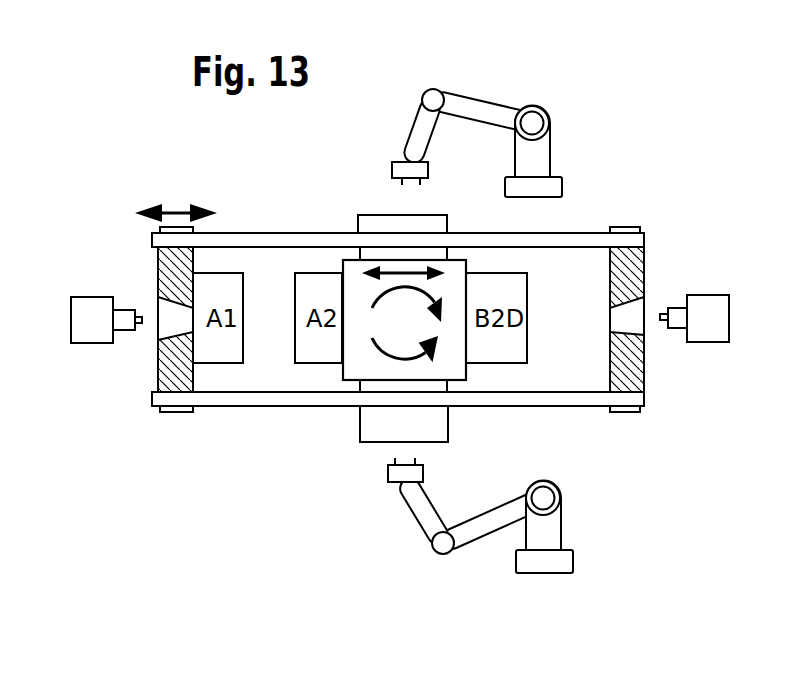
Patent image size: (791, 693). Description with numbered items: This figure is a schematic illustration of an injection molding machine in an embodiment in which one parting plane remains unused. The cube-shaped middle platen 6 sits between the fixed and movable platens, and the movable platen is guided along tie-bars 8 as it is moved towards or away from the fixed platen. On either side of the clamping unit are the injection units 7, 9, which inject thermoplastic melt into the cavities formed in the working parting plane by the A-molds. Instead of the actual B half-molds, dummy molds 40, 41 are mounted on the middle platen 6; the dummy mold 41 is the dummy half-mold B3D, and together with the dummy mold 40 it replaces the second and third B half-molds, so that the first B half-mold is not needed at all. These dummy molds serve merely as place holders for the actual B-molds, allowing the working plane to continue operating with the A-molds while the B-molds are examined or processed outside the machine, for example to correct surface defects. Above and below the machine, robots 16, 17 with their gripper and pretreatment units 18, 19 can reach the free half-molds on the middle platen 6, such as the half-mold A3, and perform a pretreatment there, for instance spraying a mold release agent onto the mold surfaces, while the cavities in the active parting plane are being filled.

The middle platen 6 is at (353, 372).
The injection unit 7 is at (98, 332).
The tie-bars 8 is at (253, 398).
The injection unit 9 is at (709, 330).
The robot 16 is at (560, 156).
The robot 17 is at (567, 531).
The gripper and pretreatment unit 18 is at (393, 170).
The gripper and pretreatment unit 19 is at (385, 478).
The dummy mold 40 is at (511, 355).
The dummy mold 41 is at (360, 432).
The half-mold A3 is at (360, 227).
The dummy half-mold B3D is at (425, 428).